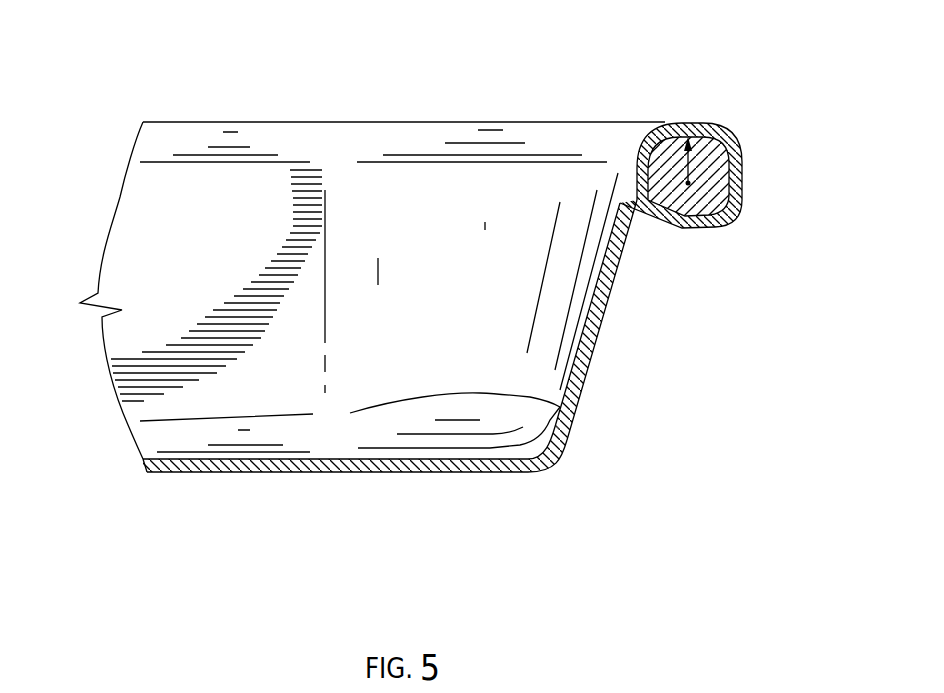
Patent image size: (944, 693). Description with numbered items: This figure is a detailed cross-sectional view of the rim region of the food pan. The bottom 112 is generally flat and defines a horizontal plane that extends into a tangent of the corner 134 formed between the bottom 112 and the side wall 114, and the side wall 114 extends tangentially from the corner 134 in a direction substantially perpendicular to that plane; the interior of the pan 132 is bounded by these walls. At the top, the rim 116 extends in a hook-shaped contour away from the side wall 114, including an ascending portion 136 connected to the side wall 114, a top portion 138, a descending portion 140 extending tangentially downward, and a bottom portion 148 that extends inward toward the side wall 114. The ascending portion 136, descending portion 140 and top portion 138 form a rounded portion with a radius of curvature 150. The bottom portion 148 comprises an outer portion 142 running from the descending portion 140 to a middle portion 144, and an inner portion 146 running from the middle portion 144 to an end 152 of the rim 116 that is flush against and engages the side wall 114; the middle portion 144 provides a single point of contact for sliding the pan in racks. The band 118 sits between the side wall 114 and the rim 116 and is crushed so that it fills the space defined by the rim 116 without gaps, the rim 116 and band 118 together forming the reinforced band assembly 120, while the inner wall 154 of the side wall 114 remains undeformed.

The bottom 112 is at (183, 457).
The side wall 114 is at (597, 345).
The rim 116 is at (718, 126).
The band 118 is at (721, 136).
The reinforced band assembly 120 is at (772, 195).
The container interior 132 is at (236, 250).
The corner 134 is at (537, 460).
The ascending portion 136 is at (641, 140).
The top portion 138 is at (689, 124).
The descending portion 140 is at (743, 158).
The outer portion 142 is at (743, 210).
The middle portion 144 is at (703, 226).
The inner portion 146 is at (661, 229).
The bottom portion 148 is at (715, 278).
The radius of curvature 150 is at (648, 163).
The end 152 is at (632, 206).
The inner wall 154 is at (580, 319).